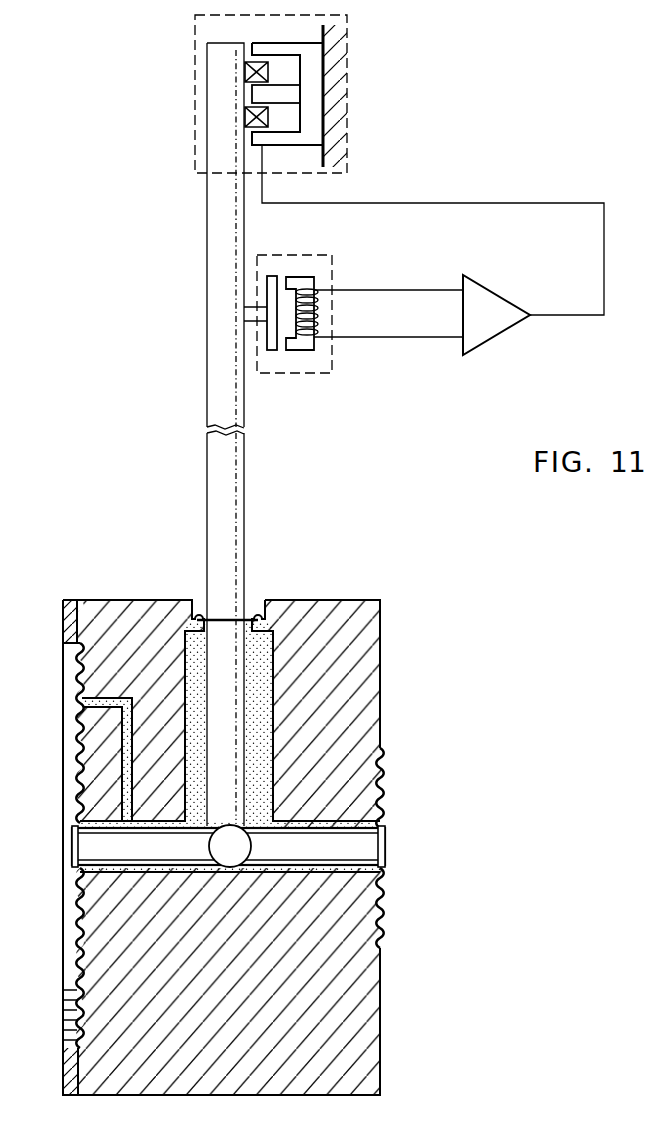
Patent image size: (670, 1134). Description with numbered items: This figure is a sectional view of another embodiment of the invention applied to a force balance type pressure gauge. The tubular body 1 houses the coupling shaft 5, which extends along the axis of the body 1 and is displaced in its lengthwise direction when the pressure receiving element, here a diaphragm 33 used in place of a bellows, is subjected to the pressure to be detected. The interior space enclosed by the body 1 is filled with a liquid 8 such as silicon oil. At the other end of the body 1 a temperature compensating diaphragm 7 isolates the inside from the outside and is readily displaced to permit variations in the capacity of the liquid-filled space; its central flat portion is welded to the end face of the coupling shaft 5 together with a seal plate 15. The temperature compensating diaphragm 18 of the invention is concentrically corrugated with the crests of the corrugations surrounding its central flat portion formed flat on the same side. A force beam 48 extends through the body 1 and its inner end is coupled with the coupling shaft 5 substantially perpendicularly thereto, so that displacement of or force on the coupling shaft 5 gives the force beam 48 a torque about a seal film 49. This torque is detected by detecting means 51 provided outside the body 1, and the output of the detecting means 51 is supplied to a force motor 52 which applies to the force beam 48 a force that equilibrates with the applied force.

The body 1 is at (380, 658).
The coupling shaft 5 is at (365, 848).
The temperature compensating diaphragm 7 is at (75, 688).
The liquid 8 is at (75, 720).
The seal plate 15 is at (72, 847).
The temperature compensating diaphragm 18 is at (78, 949).
The diaphragm 33 is at (382, 777).
The force beam 48 is at (246, 500).
The seal film 49 is at (256, 614).
The detecting means 51 is at (303, 253).
The sensor unit 52 is at (195, 97).